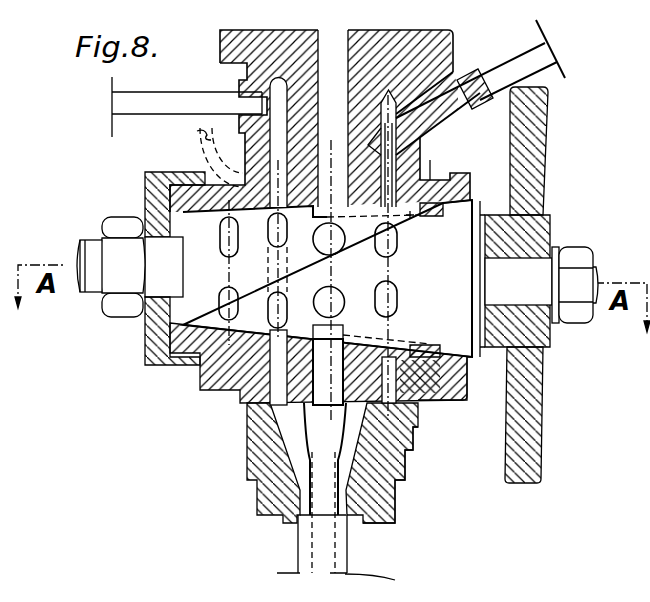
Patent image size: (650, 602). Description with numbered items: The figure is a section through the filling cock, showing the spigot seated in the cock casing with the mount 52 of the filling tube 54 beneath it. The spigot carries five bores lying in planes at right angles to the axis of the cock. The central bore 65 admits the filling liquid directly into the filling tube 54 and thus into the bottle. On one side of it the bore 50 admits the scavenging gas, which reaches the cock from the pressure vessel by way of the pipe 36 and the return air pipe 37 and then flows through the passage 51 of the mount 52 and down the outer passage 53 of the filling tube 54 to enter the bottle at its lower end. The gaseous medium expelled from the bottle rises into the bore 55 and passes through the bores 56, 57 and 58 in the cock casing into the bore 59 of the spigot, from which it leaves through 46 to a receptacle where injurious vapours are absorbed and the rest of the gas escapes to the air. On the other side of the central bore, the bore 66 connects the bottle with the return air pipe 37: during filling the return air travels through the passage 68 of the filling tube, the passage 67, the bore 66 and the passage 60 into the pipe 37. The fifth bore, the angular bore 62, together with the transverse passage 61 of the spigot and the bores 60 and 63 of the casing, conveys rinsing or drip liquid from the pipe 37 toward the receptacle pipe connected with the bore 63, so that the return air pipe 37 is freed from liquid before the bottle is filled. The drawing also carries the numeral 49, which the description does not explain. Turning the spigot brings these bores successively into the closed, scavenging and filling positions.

The pipe 36 is at (187, 107).
The return air pipe 37 is at (480, 69).
The passage 46 is at (197, 153).
The fuel passage 49 is at (276, 242).
The bore 50 is at (273, 277).
The passage 51 is at (280, 434).
The mount 52 is at (394, 498).
The outer passage 53 is at (299, 544).
The filling tube 54 is at (382, 575).
The bore 55 is at (323, 459).
The bore 56 is at (330, 224).
The bore 57 is at (420, 376).
The bore 58 is at (193, 368).
The bore 59 is at (227, 248).
The bore 60 is at (424, 255).
The transverse passage 61 is at (424, 216).
The angular bore 62 is at (434, 217).
The bore 63 is at (436, 398).
The central bore 65 is at (329, 270).
The bore 66 is at (394, 311).
The passage 67 is at (399, 447).
The passage 68 is at (344, 549).